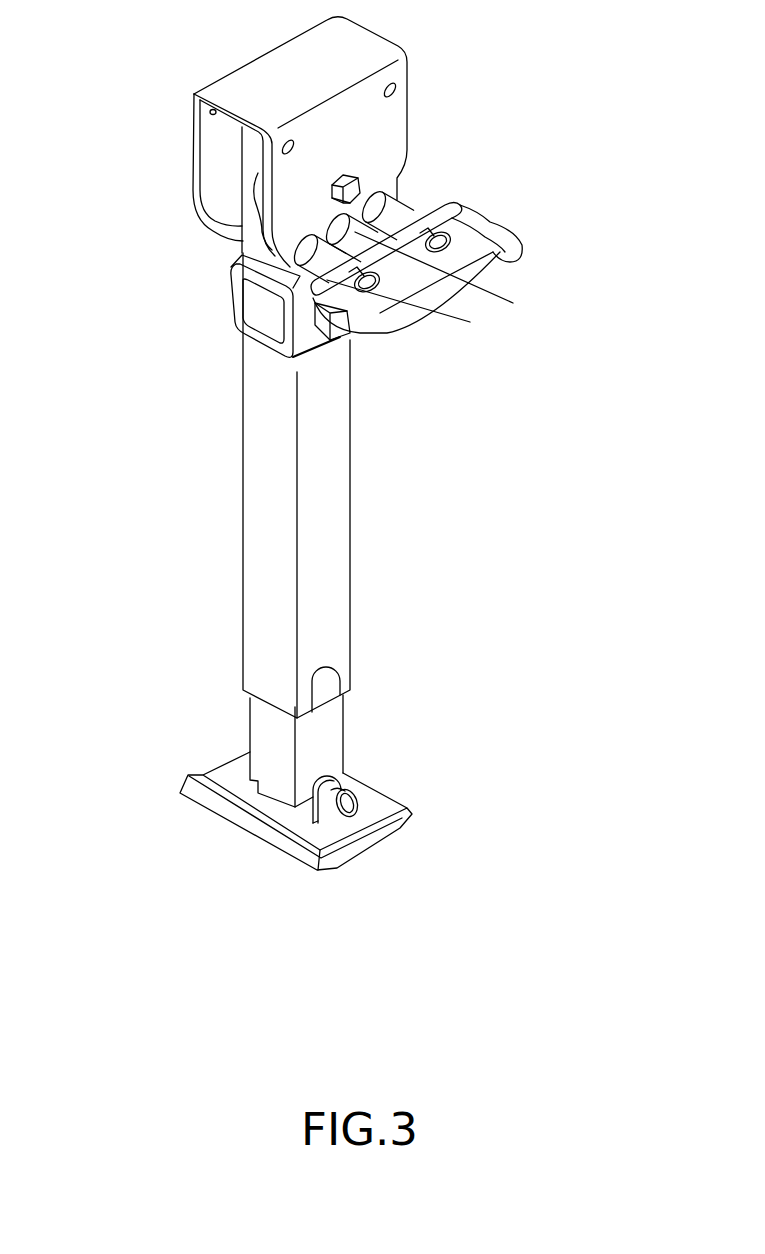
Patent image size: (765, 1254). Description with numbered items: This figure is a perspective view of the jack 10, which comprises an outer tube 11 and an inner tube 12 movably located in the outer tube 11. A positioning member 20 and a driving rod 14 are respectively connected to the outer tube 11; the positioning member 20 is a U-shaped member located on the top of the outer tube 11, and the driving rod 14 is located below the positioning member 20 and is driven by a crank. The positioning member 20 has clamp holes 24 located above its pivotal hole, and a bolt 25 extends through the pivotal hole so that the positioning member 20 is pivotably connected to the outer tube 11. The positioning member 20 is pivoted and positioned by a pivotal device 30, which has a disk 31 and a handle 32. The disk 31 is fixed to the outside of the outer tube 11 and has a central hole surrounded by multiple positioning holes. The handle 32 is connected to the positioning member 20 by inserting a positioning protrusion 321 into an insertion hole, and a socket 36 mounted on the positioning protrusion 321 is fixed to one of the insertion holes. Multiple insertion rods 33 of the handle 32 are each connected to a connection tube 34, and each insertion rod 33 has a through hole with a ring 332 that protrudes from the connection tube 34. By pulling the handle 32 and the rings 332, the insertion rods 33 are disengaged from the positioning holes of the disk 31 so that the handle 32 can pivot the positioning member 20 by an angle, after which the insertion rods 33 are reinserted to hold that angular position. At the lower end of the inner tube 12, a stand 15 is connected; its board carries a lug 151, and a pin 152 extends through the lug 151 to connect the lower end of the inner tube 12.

The jack 10 is at (188, 485).
The outer tube 11 is at (250, 588).
The inner tube 12 is at (338, 717).
The driving rod 14 is at (352, 340).
The stand 15 is at (408, 810).
The lug 151 is at (322, 810).
The pin 152 is at (325, 793).
The positioning member 20 is at (193, 130).
The clamp hole 24 is at (397, 87).
The bolt 25 is at (332, 186).
The pivotal device 30 is at (522, 183).
The disk 31 is at (257, 215).
The handle 32 is at (423, 313).
The positioning protrusion 321 is at (367, 238).
The insertion rod 33 is at (435, 203).
The ring 332 is at (447, 248).
The connection tube 34 is at (400, 203).
The socket 36 is at (290, 224).